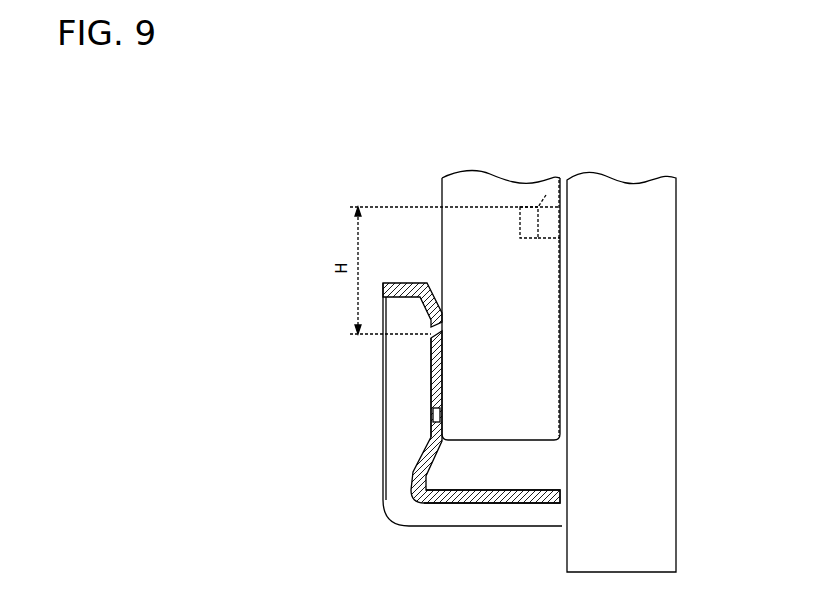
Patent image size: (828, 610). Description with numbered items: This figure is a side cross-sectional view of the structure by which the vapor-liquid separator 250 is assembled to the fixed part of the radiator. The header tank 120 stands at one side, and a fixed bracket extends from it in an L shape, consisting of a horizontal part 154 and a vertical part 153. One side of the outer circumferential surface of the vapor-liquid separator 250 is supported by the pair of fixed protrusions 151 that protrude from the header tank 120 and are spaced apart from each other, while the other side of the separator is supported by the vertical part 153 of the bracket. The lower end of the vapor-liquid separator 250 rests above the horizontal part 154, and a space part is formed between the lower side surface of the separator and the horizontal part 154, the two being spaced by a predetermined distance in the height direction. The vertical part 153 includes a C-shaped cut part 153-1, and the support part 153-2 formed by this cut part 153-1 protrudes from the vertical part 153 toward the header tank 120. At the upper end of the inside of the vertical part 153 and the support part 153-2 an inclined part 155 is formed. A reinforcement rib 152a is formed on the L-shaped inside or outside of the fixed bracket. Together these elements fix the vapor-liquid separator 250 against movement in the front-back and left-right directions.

The 1-2-th header tank 120 is at (637, 178).
The vapor-liquid separator 250 is at (476, 178).
The fixed protrusion 151 is at (538, 180).
The reinforcement rib 152a is at (399, 471).
The vertical part 153 is at (431, 437).
The cut part 153-1 is at (432, 417).
The support part 153-2 is at (430, 388).
The horizontal part 154 is at (509, 503).
The inclined part 155 is at (430, 320).